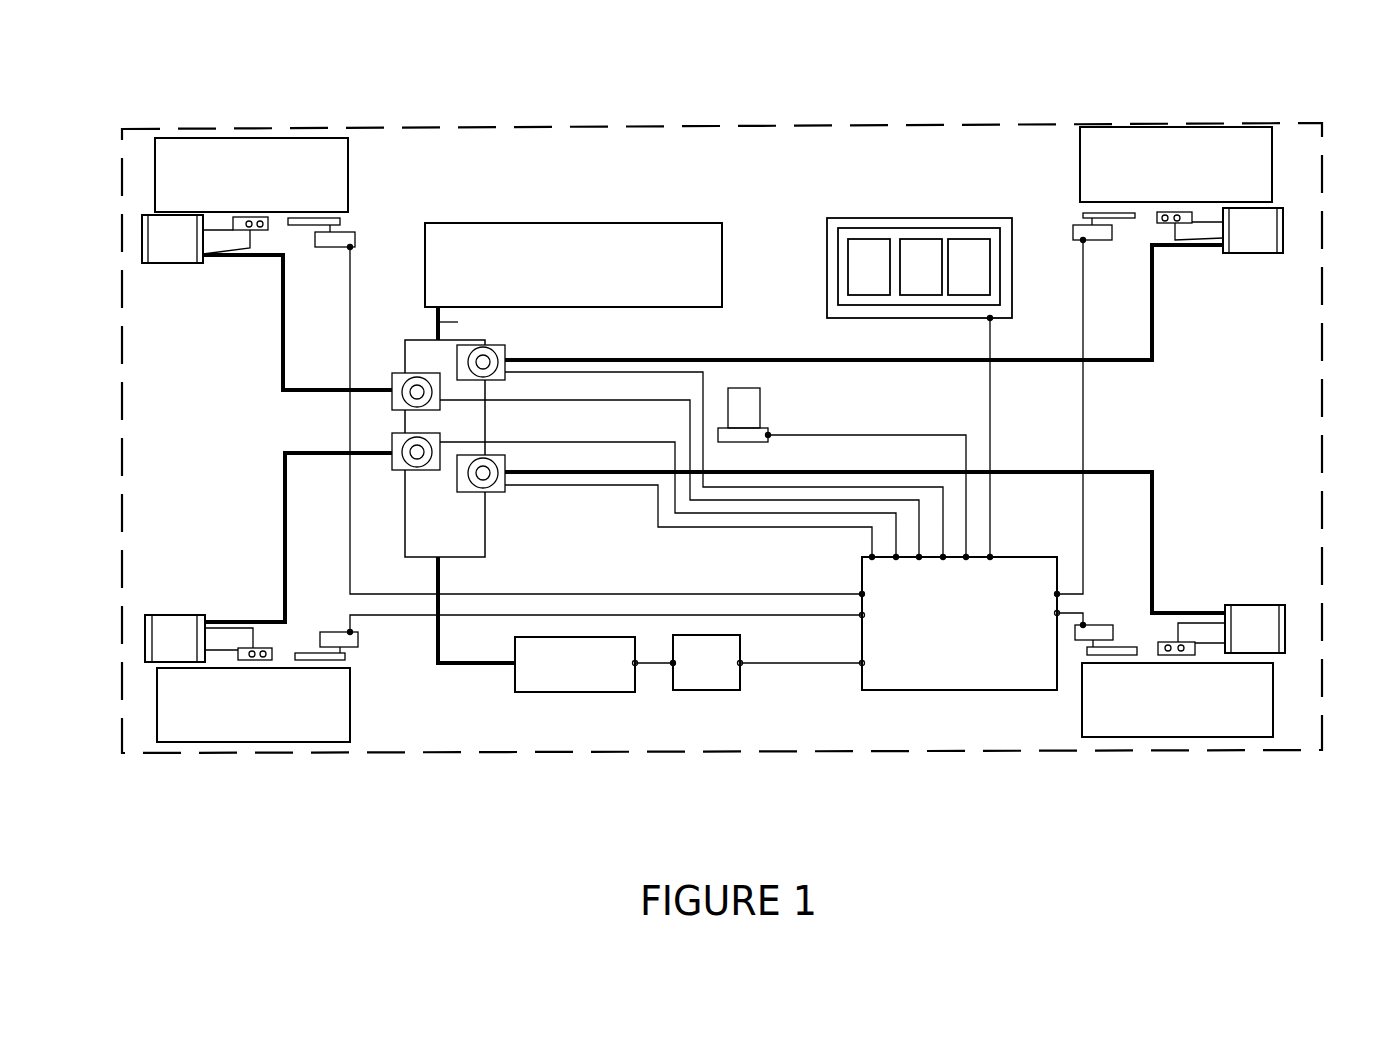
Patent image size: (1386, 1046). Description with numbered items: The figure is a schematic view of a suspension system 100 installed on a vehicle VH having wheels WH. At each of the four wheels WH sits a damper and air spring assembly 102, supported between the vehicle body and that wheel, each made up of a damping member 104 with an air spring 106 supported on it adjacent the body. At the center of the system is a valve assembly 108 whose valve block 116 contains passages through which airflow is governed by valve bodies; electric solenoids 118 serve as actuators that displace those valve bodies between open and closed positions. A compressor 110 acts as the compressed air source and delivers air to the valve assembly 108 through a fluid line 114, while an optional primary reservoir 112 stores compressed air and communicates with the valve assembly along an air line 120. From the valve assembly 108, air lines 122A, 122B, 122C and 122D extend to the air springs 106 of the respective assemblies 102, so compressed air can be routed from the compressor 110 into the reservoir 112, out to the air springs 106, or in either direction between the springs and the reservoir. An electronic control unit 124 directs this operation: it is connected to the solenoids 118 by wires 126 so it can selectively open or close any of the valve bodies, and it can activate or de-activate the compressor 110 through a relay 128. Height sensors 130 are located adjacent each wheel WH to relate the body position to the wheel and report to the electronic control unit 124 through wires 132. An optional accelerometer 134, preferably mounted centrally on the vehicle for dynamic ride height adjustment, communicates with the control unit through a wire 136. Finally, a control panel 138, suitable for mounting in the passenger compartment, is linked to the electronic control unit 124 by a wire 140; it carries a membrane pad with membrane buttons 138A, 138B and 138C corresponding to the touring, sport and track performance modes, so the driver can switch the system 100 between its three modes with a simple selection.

The suspension system 100 is at (1052, 107).
The damper and air spring assembly 102 is at (729, 439).
The damping member 104 is at (218, 240).
The air spring 106 is at (158, 248).
The valve assembly 108 is at (465, 420).
The compressor 110 is at (566, 698).
The primary reservoir 112 is at (565, 218).
The fluid line 114 is at (470, 668).
The valve block 116 is at (455, 545).
The electric solenoid 118 is at (423, 378).
The air line 120 is at (468, 323).
The air line 122A is at (282, 328).
The air line 122B is at (285, 525).
The air line 122C is at (1112, 360).
The air line 122D is at (1120, 470).
The electronic control unit 124 is at (948, 692).
The wires 126 is at (830, 487).
The relay 128 is at (700, 692).
The height sensor 130 is at (352, 222).
The wires 132 is at (600, 613).
The accelerometer 134 is at (762, 413).
The wire 136 is at (893, 433).
The control panel 138 is at (927, 235).
The membrane button 138A is at (853, 248).
The membrane button 138B is at (918, 248).
The membrane button 138C is at (980, 250).
The wire 140 is at (993, 432).
The vehicle VH is at (787, 124).
The wheels WH is at (263, 163).